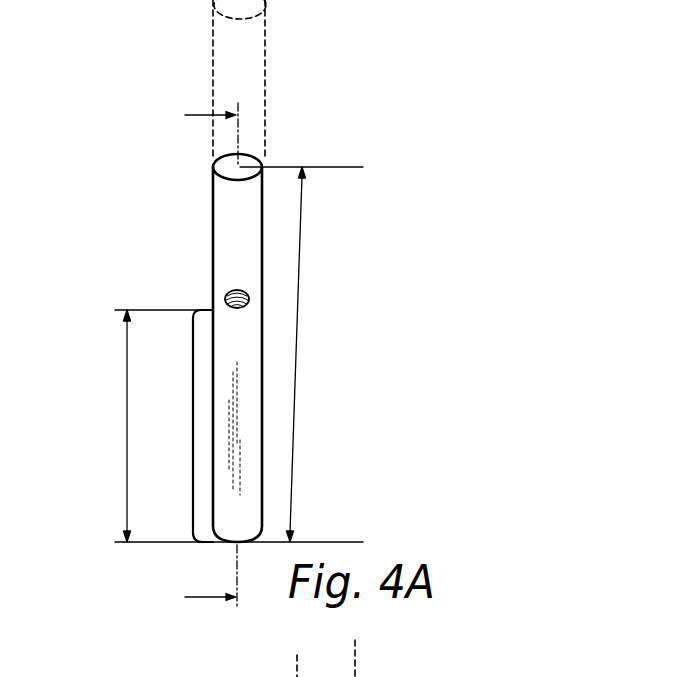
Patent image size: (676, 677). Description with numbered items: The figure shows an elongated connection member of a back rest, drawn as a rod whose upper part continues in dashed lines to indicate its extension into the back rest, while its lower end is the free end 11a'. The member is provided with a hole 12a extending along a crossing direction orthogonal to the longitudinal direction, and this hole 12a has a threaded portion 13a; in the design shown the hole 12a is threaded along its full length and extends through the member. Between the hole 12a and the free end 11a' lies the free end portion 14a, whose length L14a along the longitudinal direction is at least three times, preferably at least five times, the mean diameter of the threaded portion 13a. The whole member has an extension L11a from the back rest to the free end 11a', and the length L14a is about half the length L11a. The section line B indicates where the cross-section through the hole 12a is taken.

The free end 11a' is at (192, 401).
The hole 12a is at (318, 309).
The threaded portion 13a is at (249, 298).
The free end portion 14a is at (191, 431).
The extension of the elongated connection member L11a is at (298, 280).
The length of the free end portion L14a is at (136, 426).
The section line B- B is at (211, 364).